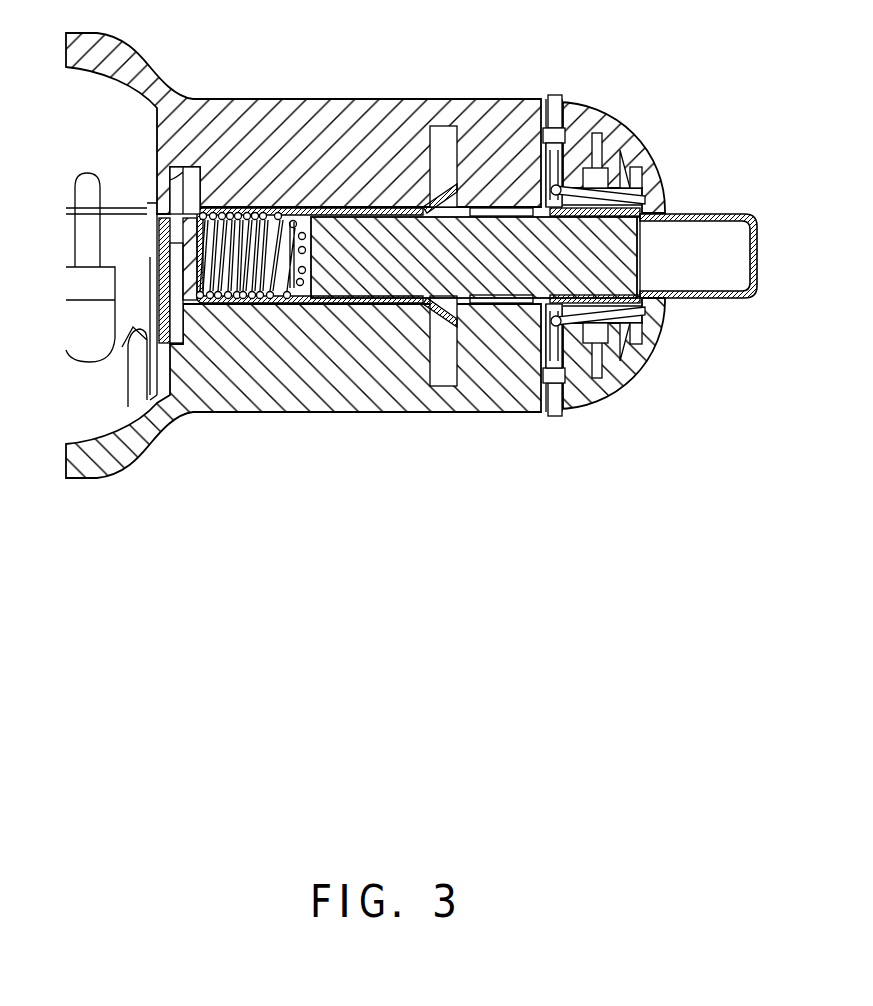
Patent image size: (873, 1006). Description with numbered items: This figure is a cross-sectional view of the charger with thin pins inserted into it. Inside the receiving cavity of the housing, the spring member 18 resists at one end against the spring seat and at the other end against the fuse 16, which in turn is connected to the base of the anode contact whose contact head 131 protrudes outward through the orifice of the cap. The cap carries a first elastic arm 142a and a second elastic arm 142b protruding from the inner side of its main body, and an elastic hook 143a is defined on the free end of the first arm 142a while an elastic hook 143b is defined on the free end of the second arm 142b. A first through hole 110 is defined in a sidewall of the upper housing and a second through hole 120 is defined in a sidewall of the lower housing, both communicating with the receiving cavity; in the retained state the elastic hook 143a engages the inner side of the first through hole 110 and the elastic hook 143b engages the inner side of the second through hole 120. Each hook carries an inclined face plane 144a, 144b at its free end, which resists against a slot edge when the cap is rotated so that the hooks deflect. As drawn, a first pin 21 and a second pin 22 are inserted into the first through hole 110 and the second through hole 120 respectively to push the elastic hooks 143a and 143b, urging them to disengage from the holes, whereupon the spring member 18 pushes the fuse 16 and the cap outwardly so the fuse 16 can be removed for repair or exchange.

The fuse 16 is at (367, 232).
The spring member 18 is at (250, 240).
The first pin 21 is at (557, 94).
The second pin 22 is at (560, 417).
The first through hole 110 is at (545, 183).
The second through hole 120 is at (540, 327).
The contact head 131 is at (733, 275).
The first elastic arm 142a is at (647, 150).
The second elastic arm 142b is at (575, 333).
The elastic hook 143a is at (578, 150).
The elastic hook 143b is at (600, 375).
The inclined face plane 144a is at (545, 203).
The inclined face plane 144b is at (540, 327).